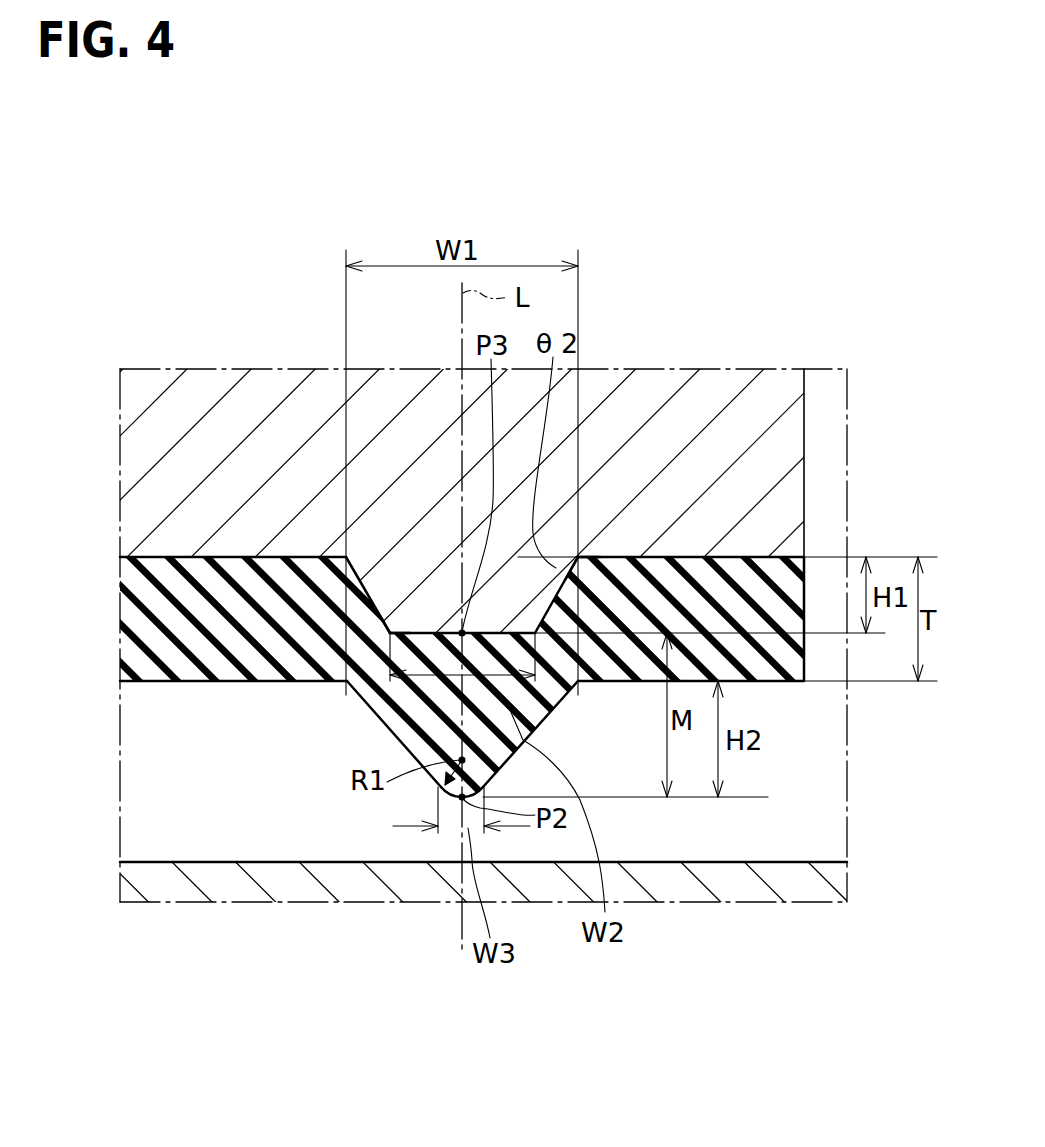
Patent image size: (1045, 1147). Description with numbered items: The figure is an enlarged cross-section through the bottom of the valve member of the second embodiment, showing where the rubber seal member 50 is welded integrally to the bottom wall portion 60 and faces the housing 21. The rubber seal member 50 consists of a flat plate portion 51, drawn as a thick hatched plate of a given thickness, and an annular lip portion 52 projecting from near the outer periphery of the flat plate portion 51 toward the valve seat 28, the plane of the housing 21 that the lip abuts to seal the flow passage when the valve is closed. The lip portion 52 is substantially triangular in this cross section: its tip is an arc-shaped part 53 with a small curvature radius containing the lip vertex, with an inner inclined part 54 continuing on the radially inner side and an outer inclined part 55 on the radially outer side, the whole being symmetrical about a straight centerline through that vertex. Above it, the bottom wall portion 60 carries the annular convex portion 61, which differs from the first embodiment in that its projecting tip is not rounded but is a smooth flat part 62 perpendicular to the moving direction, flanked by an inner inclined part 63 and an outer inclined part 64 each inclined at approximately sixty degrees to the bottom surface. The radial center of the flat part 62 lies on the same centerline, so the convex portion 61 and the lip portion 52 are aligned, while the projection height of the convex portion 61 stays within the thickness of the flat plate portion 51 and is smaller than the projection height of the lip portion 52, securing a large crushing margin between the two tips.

The housing 21 is at (171, 882).
The valve seat 28 is at (800, 857).
The rubber seal member 50 is at (158, 678).
The flat plate portion 51 is at (262, 668).
The lip portion 52 is at (383, 722).
The arc-shaped part 53 is at (460, 799).
The inner inclined part 54 is at (405, 730).
The outer inclined part 55 is at (546, 717).
The bottom wall portion 60 is at (770, 400).
The convex portion 61 is at (383, 570).
The flat part 62 is at (437, 632).
The inner inclined part 63 is at (377, 615).
The outer inclined part 64 is at (560, 572).